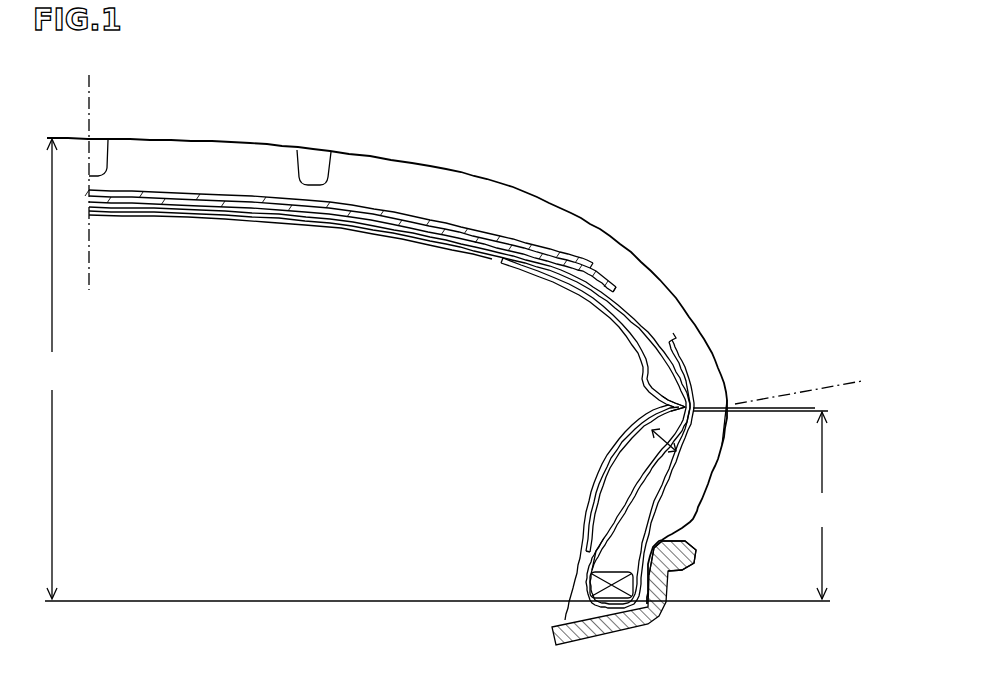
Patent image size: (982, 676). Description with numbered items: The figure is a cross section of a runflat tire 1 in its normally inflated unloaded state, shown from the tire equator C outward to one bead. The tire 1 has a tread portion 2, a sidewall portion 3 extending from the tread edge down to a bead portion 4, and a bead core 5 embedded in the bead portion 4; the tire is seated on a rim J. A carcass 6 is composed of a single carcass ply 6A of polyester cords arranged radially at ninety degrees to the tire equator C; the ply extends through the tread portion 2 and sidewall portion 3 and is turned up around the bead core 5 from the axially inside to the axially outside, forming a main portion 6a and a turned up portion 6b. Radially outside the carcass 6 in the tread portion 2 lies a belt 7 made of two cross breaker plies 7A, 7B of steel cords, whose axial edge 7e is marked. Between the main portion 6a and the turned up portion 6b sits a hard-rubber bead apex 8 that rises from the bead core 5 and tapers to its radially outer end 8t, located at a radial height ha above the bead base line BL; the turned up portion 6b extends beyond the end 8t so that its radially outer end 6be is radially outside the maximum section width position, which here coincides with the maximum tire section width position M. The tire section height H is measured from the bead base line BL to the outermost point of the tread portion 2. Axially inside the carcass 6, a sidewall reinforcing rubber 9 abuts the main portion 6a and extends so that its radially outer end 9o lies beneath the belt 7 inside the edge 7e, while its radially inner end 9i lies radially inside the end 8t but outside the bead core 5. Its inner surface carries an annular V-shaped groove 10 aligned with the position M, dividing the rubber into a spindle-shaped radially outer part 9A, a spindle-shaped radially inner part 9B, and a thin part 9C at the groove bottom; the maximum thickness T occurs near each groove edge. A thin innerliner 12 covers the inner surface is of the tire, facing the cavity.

The runflat tire 1 is at (632, 166).
The tread portion 2 is at (252, 134).
The sidewall portion 3 is at (727, 354).
The bead portion 4 is at (660, 570).
The bead core 5 is at (598, 585).
The carcass 6 is at (483, 407).
The carcass ply 6A is at (483, 407).
The main portion 6a is at (650, 316).
The turned up portion 6b is at (676, 346).
The radially outer end of the turned up portion 6be is at (662, 341).
The belt 7 is at (350, 256).
The breaker ply 7A is at (140, 205).
The breaker ply 7B is at (195, 210).
The axial edge of the belt 7e is at (624, 288).
The bead apex 8 is at (607, 560).
The radially outer end of the bead apex 8t is at (697, 412).
The sidewall reinforcing rubber 9 is at (555, 405).
The radially outer part 9A is at (607, 307).
The radially inner part 9B is at (647, 449).
The thin part 9C is at (640, 430).
The radially outer end 9o is at (503, 255).
The radially inner end 9i is at (590, 551).
The annular groove 10 is at (735, 404).
The innerliner 12 is at (287, 226).
The inner surface is is at (612, 478).
The maximum thickness T is at (675, 455).
The maximum tire section width position M is at (811, 386).
The tire section height H is at (52, 369).
The radial height of the bead apex outer end ha is at (820, 505).
The bead base line BL is at (280, 601).
The tire equator C is at (87, 170).
The rim J is at (607, 625).